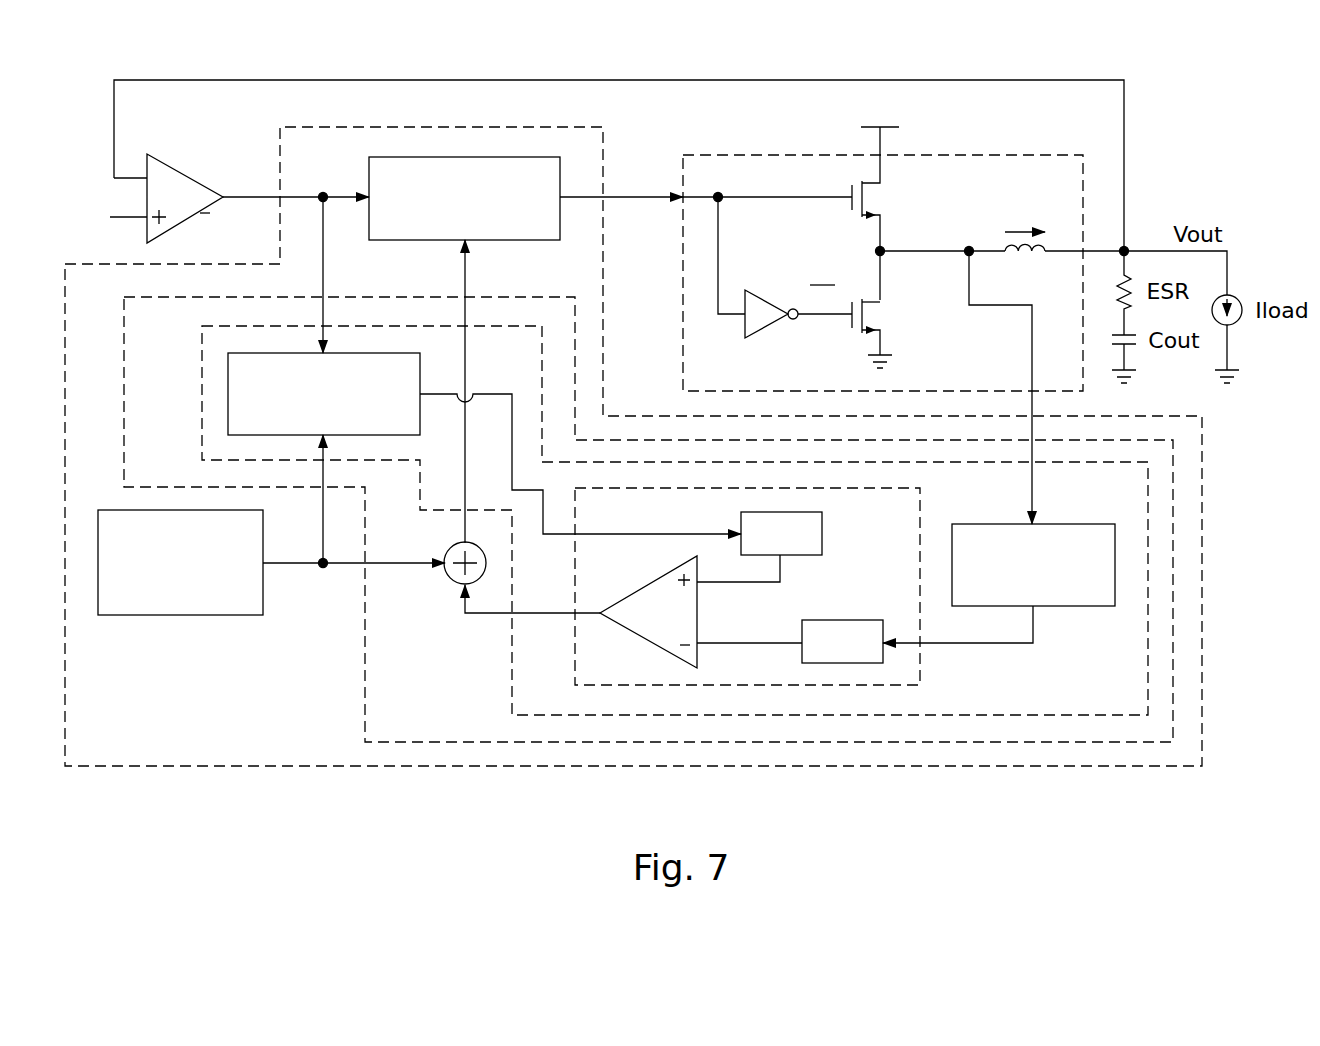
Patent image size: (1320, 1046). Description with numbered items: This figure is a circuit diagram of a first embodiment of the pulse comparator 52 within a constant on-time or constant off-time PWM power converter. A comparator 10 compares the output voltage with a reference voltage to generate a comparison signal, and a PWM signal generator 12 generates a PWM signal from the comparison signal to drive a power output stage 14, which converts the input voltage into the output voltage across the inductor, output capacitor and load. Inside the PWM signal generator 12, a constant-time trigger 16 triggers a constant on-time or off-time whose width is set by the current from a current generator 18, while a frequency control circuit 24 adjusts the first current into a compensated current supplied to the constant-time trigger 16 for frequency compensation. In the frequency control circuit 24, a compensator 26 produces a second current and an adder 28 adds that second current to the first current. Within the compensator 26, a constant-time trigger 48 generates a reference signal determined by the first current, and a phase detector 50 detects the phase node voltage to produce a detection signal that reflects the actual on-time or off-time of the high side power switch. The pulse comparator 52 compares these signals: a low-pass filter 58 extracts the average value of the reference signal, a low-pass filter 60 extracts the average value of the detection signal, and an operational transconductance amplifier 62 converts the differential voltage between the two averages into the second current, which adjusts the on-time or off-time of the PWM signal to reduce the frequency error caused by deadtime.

The comparator 10 is at (180, 168).
The PWM signal generator 12 is at (1202, 592).
The power output stage 14 is at (990, 155).
The constant-time trigger 16 is at (523, 241).
The current generator 18 is at (178, 615).
The frequency control circuit 24 is at (365, 640).
The compensator 26 is at (512, 666).
The adder 28 is at (462, 592).
The constant-time trigger 48 is at (228, 395).
The phase detector 50 is at (1115, 560).
The pulse comparator 52 is at (745, 488).
The low-pass filter 58 is at (822, 532).
The low-pass filter 60 is at (840, 663).
The operational transconductance amplifier 62 is at (645, 640).